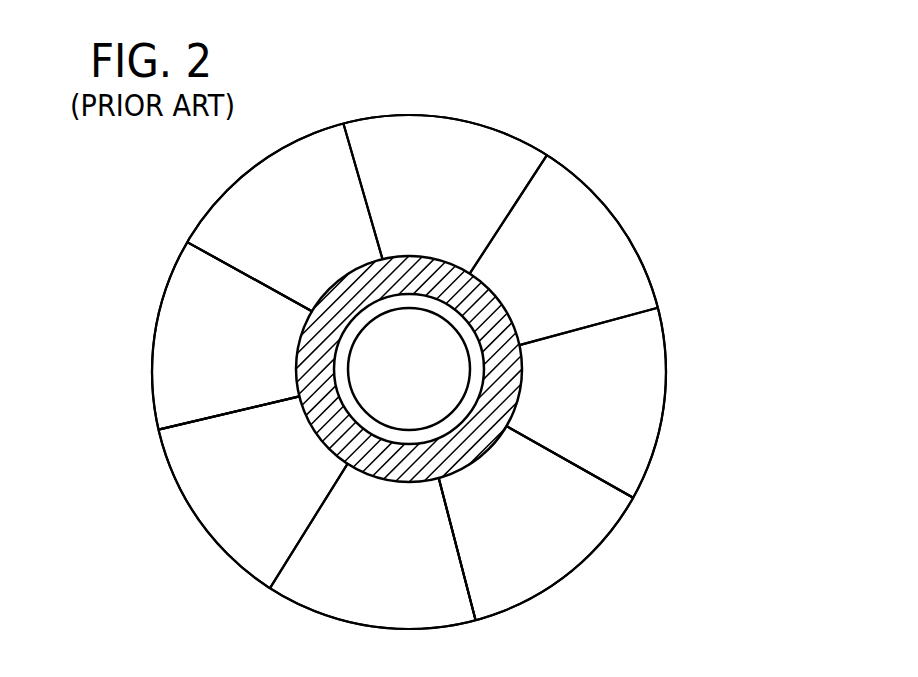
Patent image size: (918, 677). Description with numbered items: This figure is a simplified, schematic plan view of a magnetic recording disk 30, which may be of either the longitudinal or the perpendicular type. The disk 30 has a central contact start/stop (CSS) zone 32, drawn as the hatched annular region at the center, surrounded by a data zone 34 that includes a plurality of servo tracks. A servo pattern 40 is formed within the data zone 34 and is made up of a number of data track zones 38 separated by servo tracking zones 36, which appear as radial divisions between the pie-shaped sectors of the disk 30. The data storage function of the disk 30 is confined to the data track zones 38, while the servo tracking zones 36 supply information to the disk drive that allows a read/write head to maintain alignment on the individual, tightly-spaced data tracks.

The magnetic recording disk 30 is at (612, 175).
The contact start/stop (CSS) zone 32 is at (514, 384).
The data zone 34 is at (537, 500).
The servo tracking zones 36 is at (362, 192).
The data track zones 38 is at (327, 168).
The servo pattern 40 is at (240, 352).